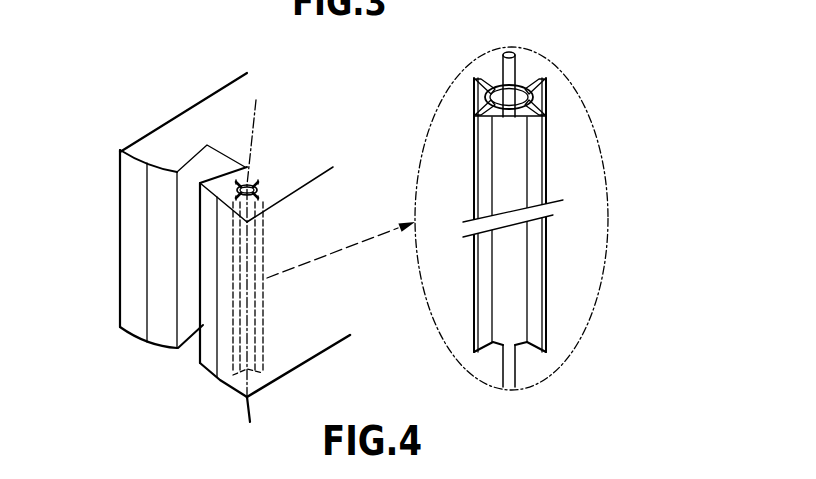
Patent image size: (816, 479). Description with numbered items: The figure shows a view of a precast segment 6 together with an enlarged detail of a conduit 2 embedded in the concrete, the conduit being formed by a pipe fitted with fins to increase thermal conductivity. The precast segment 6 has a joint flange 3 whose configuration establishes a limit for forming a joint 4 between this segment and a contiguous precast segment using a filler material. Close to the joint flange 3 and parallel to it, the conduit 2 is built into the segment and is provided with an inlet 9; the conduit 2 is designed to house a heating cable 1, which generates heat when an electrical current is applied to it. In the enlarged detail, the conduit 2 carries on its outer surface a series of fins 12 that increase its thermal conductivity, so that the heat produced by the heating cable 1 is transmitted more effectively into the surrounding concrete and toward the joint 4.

The heating cable 1 is at (501, 58).
The conduit 2 is at (257, 180).
The joint flange 3 is at (131, 178).
The joint 4 is at (186, 187).
The precast segment 6 is at (213, 107).
The inlet 9 is at (516, 90).
The fin 12 is at (485, 153).